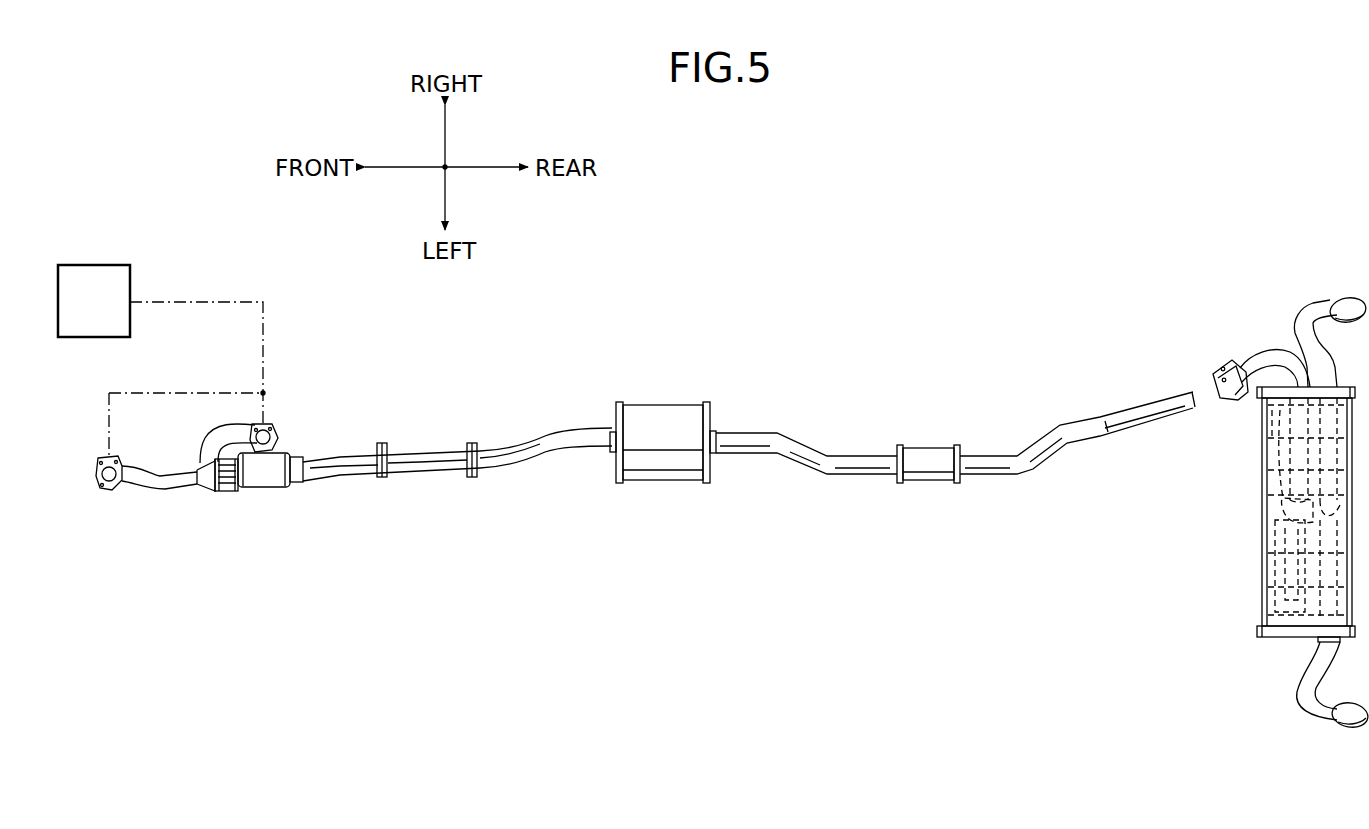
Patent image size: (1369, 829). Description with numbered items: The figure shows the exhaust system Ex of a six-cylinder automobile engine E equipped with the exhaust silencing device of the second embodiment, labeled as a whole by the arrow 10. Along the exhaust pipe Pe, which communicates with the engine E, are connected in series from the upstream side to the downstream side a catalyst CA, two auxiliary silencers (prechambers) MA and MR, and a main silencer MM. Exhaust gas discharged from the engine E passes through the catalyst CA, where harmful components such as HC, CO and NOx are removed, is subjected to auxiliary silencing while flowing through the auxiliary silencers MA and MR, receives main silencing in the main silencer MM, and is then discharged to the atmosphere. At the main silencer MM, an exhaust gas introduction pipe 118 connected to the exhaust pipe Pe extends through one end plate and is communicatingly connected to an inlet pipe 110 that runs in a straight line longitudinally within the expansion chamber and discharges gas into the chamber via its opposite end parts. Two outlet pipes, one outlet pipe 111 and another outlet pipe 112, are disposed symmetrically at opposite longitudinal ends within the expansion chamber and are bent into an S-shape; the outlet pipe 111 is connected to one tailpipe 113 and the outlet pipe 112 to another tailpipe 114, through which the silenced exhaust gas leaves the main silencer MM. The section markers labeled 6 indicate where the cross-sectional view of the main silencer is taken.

The engine E is at (105, 316).
The exhaust system Ex is at (732, 514).
The catalyst CA is at (262, 488).
The exhaust pipe Pe is at (548, 466).
The auxiliary silencer MA is at (663, 466).
The auxiliary silencer MR is at (928, 472).
The main silencer MM is at (1248, 512).
The muffler device 10 is at (1212, 632).
The inlet pipe 110 is at (1290, 503).
The one outlet pipe 111 is at (1268, 596).
The other outlet pipe 112 is at (1263, 455).
The one tailpipe 113 is at (1319, 712).
The other tailpipe 114 is at (1313, 305).
The exhaust gas introduction pipe 118 is at (1257, 362).
The section line of FIG. 6 is at (1327, 380).